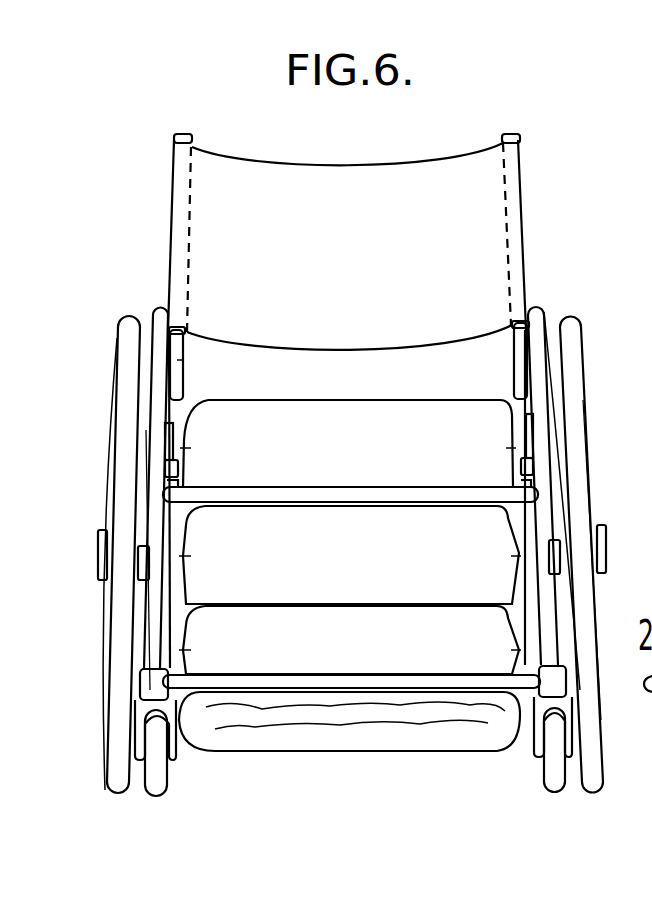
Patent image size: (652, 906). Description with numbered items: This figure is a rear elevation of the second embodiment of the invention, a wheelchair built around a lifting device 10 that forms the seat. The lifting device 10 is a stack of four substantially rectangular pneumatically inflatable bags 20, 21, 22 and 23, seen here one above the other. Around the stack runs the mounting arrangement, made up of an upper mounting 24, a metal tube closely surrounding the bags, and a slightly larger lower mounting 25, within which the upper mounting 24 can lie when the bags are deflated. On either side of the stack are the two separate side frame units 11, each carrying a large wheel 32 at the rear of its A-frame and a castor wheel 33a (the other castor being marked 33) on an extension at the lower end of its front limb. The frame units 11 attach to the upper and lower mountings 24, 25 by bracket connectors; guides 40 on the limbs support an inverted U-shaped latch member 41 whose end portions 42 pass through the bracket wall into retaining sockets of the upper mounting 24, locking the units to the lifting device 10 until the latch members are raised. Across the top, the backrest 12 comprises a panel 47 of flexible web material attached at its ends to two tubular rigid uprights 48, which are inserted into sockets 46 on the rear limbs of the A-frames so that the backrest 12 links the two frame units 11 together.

The lifting device 10 is at (346, 437).
The side frame unit 11 is at (150, 302).
The backrest 12 is at (522, 193).
The pneumatically inflatable bag 20 is at (285, 458).
The pneumatically inflatable bag 21 is at (281, 564).
The pneumatically inflatable bag 22 is at (281, 659).
The pneumatically inflatable bag 23 is at (285, 744).
The upper mounting 24 is at (374, 494).
The lower mounting 25 is at (372, 686).
The large wheel 32 is at (128, 365).
The caster wheel 33 is at (157, 778).
The castor wheel 33a is at (557, 772).
The guide 40 is at (528, 463).
The latch member 41 is at (532, 432).
The end portion 42 is at (531, 480).
The socket 46 is at (183, 357).
The panel 47 is at (357, 241).
The upright 48 is at (180, 213).